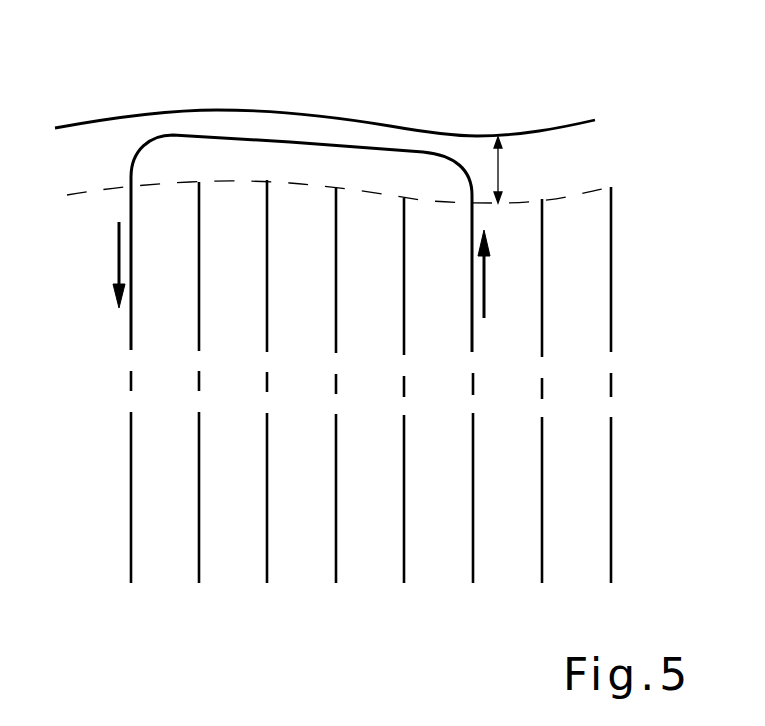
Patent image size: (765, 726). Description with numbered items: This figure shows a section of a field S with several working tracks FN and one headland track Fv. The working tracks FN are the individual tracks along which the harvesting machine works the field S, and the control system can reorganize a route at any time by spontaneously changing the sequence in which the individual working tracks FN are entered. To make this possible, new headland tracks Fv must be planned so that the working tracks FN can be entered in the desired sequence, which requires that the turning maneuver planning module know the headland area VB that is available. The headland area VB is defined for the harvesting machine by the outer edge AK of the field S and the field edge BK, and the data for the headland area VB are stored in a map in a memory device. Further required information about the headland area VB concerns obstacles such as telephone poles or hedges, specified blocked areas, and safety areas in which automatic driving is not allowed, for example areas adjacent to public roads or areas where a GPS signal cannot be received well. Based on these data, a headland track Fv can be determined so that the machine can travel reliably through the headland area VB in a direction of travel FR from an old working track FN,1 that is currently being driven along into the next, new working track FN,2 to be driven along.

The outer edge AK is at (213, 110).
The headland track Fv is at (313, 142).
The field edge BK is at (95, 190).
The headland area VB is at (500, 173).
The field S is at (306, 281).
The working tracks FN is at (199, 556).
The old working track FN,1 is at (472, 245).
The new working track FN,2 is at (132, 253).
The direction of travel FR is at (118, 255).